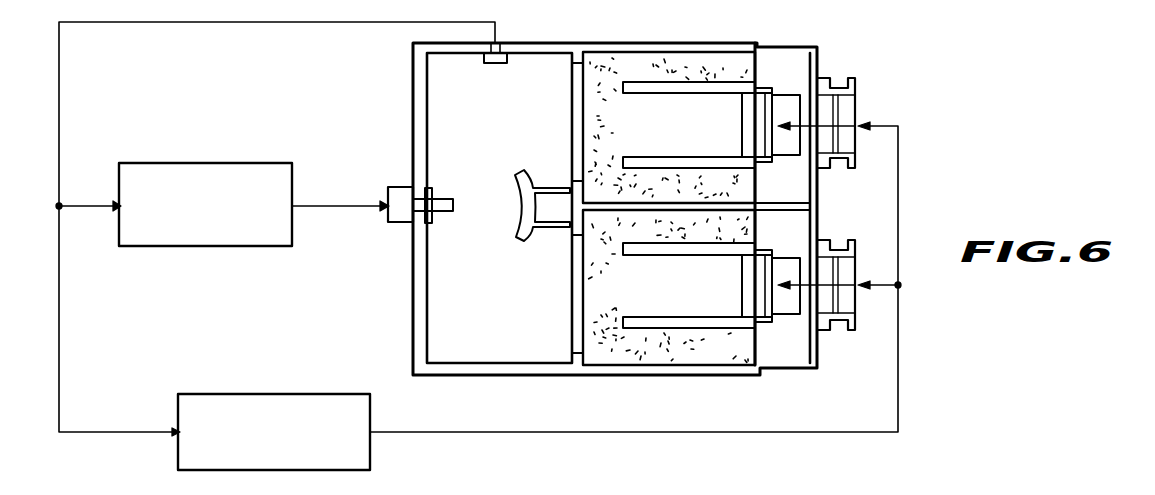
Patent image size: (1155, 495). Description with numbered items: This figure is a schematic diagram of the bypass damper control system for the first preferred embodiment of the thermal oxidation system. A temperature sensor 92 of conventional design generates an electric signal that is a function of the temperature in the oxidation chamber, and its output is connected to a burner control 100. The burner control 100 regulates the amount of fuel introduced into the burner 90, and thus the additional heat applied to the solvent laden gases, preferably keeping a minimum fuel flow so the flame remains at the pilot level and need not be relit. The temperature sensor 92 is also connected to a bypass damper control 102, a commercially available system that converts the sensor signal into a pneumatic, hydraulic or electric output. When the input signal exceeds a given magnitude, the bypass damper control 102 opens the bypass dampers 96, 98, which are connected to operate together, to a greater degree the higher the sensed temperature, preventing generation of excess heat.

The burner 90 is at (447, 213).
The temperature sensor 92 is at (500, 63).
The bypass damper 96 is at (792, 310).
The bypass damper 98 is at (782, 112).
The burner control 100 is at (305, 146).
The bypass damper control 102 is at (360, 375).